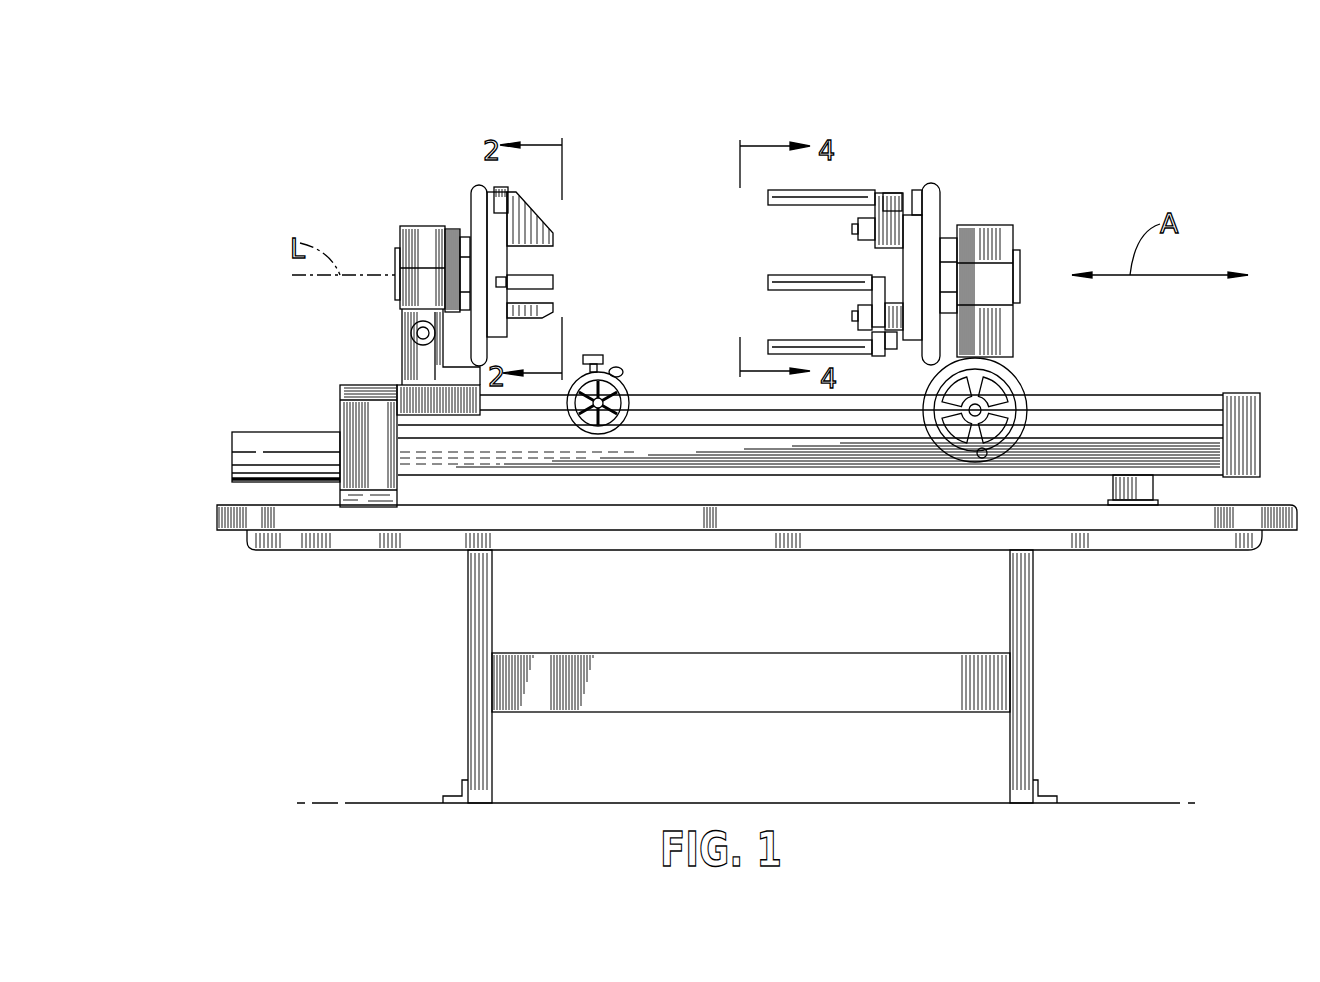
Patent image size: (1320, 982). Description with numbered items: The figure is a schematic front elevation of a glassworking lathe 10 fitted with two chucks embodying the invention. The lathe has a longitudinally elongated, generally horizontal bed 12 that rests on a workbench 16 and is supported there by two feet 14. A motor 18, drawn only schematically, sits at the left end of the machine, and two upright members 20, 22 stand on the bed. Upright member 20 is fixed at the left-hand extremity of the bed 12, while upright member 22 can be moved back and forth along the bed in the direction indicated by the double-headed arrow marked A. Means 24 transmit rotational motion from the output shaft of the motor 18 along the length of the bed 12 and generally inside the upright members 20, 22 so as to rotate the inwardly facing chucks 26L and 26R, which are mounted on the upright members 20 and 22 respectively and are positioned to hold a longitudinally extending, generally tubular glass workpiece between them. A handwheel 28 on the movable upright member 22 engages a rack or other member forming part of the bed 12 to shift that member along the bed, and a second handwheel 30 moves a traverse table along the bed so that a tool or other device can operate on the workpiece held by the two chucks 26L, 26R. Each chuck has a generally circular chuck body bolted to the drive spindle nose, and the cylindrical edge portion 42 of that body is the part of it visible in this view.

The glassworking lathe 10 is at (1083, 574).
The bed 12 is at (1215, 478).
The feet 14 is at (340, 497).
The workbench 16 is at (1280, 536).
The motor 18 is at (230, 440).
The upright member 20 is at (400, 222).
The upright member 22 is at (982, 218).
The means for transmitting rotational motion 24 is at (362, 380).
The chuck 26L is at (556, 220).
The chuck 26R is at (778, 250).
The handwheel 28 is at (1020, 378).
The handwheel 30 is at (617, 380).
The cylindrical edge portion 42 is at (497, 258).